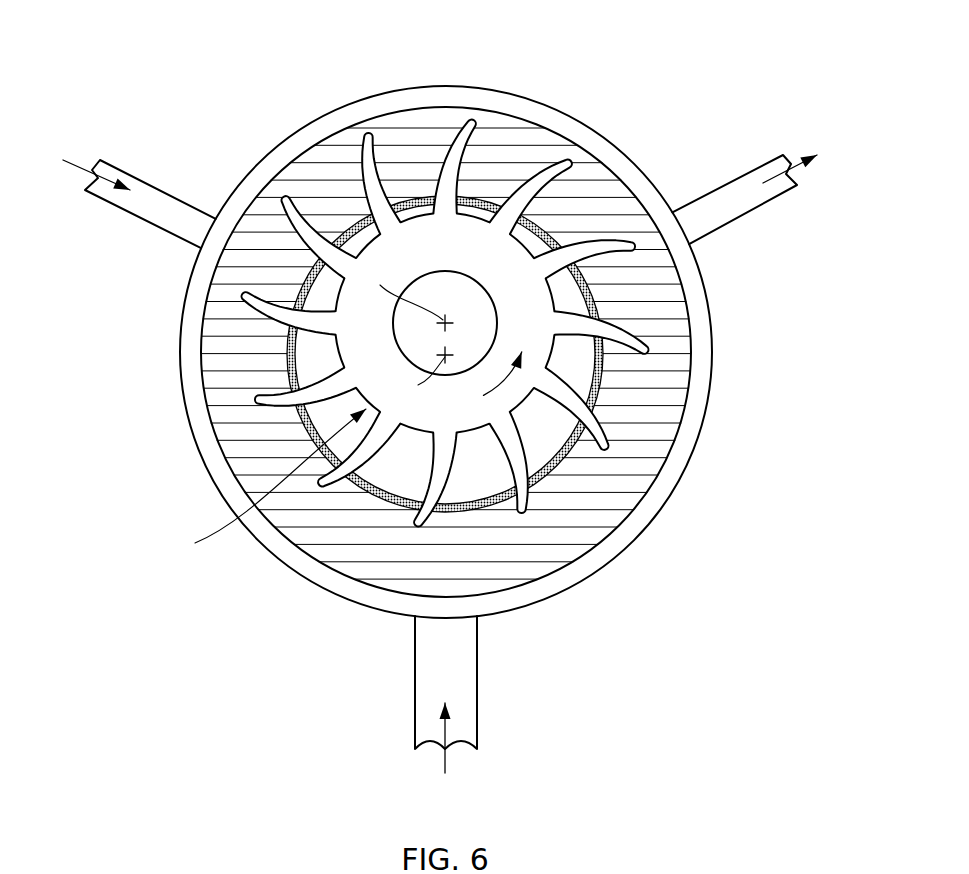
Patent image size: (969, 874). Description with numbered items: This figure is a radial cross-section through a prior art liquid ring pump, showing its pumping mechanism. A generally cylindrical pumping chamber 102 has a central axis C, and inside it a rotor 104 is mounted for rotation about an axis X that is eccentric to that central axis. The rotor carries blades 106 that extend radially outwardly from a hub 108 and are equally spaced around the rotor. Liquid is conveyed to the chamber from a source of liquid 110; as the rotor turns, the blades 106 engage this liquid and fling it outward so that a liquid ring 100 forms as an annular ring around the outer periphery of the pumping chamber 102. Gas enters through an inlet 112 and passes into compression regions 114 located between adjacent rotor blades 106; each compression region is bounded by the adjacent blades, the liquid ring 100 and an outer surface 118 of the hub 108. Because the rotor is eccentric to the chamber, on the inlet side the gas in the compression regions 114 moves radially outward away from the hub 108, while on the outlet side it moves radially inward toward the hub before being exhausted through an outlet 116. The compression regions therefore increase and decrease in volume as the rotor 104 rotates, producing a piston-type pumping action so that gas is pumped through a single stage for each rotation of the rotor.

The liquid ring 100 is at (650, 432).
The pumping chamber 102 is at (690, 325).
The rotor 104 is at (492, 257).
The blades 106 is at (450, 162).
The hub 108 is at (420, 258).
The source of liquid 110 is at (445, 762).
The inlet 112 is at (150, 185).
The compression regions 114 is at (322, 293).
The outlet 116 is at (747, 172).
The outer surface of the hub 118 is at (253, 486).